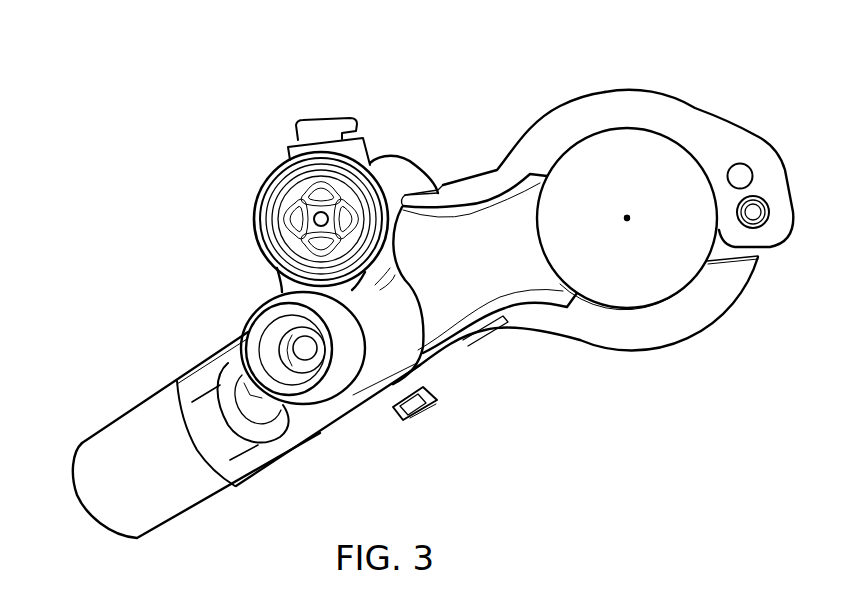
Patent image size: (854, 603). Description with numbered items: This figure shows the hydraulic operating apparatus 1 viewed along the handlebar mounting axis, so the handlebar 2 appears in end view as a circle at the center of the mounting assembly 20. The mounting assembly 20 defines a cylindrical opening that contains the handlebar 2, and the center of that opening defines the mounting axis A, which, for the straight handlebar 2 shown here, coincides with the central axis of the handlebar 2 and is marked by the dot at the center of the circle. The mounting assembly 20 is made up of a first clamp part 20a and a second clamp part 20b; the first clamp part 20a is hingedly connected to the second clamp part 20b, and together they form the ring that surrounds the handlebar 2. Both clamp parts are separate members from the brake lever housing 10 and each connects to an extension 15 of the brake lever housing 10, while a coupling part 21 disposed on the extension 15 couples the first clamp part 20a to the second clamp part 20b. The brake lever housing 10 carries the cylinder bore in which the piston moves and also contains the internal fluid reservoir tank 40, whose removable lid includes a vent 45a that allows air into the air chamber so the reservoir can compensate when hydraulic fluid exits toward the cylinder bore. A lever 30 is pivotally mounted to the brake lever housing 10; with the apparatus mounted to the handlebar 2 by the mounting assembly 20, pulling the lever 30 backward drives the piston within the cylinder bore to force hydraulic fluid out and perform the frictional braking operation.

The hydraulic operating apparatus 1 is at (196, 80).
The handlebar 2 is at (653, 178).
The brake lever housing 10 is at (350, 360).
The extension 15 is at (513, 250).
The mounting assembly 20 is at (756, 112).
The first clamp part 20a is at (643, 105).
The second clamp part 20b is at (693, 322).
The coupling part 21 is at (473, 190).
The lever 30 is at (123, 443).
The fluid reservoir tank 40 is at (395, 183).
The vent 45a is at (312, 219).
The mounting axis A is at (629, 220).